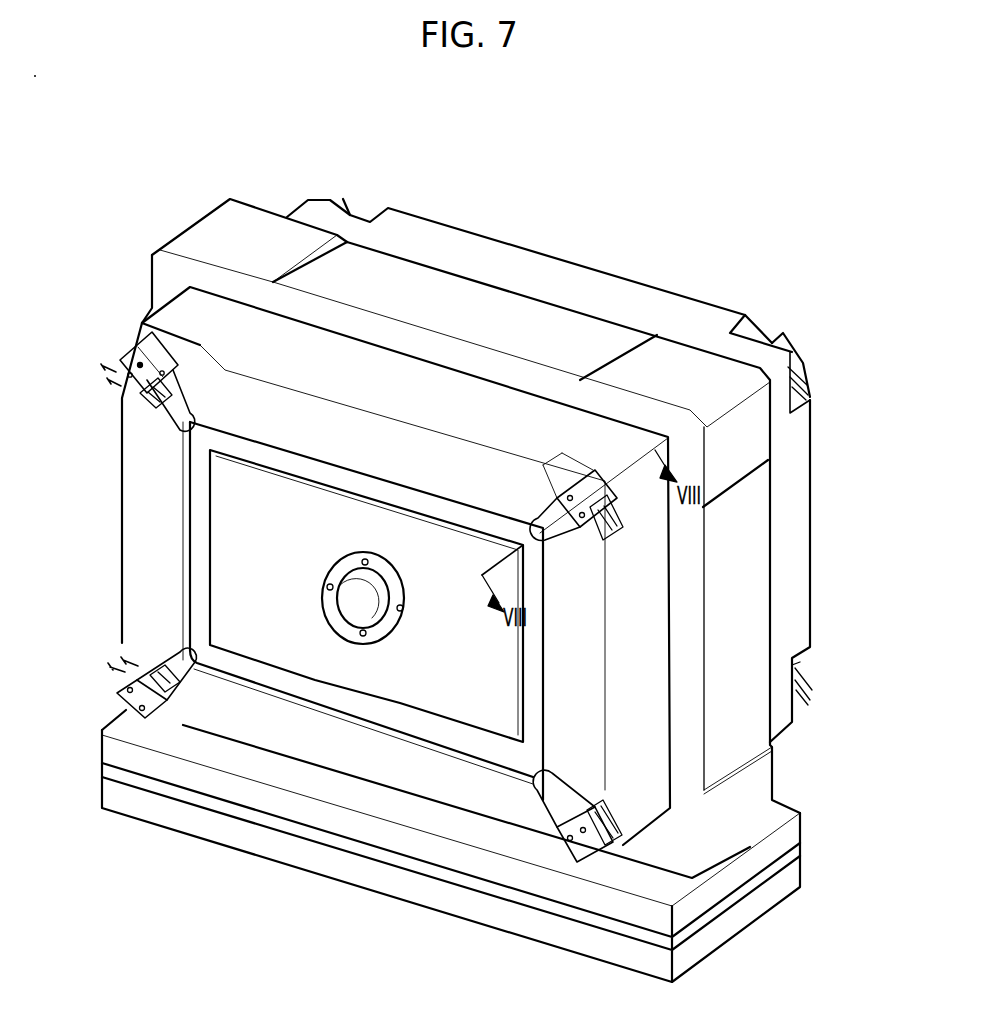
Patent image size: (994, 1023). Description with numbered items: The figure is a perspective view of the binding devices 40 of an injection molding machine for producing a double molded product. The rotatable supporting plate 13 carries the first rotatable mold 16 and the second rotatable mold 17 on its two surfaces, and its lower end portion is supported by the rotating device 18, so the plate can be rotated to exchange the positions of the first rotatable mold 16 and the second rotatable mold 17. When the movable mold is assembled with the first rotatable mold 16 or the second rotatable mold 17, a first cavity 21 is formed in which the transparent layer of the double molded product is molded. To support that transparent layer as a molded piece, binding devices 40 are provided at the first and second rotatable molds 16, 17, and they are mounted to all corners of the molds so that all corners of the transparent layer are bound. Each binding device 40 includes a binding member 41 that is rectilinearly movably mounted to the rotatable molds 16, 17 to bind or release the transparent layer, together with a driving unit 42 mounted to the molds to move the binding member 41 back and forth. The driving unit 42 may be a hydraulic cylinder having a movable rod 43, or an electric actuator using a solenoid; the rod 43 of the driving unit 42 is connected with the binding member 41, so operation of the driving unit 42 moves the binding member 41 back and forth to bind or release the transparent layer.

The rotatable supporting plate 13 is at (222, 225).
The first rotatable mold 16 is at (178, 318).
The second rotatable mold 17 is at (440, 236).
The rotating device 18 is at (595, 940).
The first cavity 21 is at (199, 612).
The binding device 40 is at (800, 350).
The binding member 41 is at (180, 414).
The driving unit 42 is at (118, 360).
The rod 43 is at (165, 372).